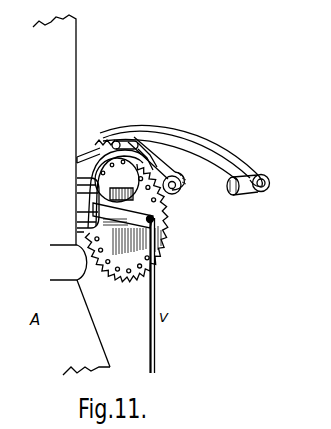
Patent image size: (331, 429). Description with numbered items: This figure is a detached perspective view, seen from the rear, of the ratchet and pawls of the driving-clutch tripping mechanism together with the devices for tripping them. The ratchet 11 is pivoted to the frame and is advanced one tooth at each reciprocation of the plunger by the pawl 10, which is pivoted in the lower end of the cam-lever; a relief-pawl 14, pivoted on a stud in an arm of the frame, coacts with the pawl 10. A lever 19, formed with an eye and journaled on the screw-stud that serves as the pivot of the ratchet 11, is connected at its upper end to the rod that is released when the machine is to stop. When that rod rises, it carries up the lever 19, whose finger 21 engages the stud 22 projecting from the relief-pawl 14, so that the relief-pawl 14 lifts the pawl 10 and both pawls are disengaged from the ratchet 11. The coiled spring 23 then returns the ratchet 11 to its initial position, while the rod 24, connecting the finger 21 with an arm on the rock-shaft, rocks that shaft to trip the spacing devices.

The pawl 10 is at (185, 160).
The ratchet 11 is at (130, 257).
The relief-pawl 14 is at (183, 178).
The lever 19 is at (121, 226).
The finger 21 is at (100, 136).
The stud 22 is at (132, 143).
The coiled spring 23 is at (122, 188).
The rod 24 is at (87, 156).